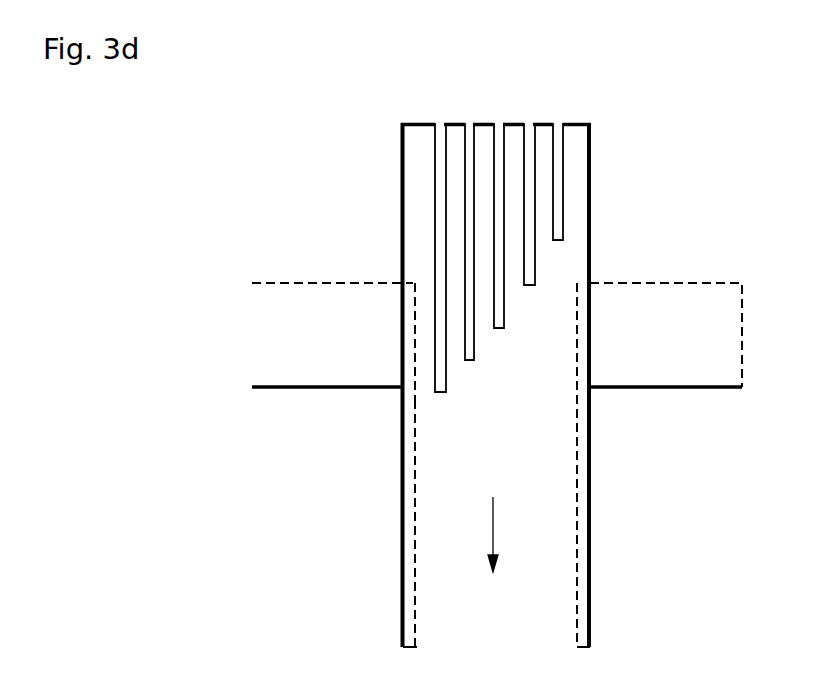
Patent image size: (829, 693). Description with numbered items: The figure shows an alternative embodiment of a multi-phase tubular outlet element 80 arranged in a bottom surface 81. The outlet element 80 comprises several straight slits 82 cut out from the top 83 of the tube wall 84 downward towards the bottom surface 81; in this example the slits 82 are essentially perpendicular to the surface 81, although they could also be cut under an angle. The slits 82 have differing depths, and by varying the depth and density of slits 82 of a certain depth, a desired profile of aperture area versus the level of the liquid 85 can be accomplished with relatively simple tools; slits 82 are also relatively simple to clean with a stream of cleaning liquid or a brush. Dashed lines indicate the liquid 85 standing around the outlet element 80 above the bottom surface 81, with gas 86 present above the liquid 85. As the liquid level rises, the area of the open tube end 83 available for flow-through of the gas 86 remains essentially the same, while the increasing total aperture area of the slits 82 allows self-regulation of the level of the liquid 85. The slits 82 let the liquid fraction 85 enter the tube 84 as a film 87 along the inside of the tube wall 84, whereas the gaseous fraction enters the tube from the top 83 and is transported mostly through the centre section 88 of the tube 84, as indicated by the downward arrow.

The tubular outlet element 80 is at (323, 120).
The bottom surface 81 is at (255, 383).
The straight slits 82 is at (468, 127).
The top of the tube wall 83 is at (590, 125).
The tube wall 84 is at (402, 540).
The liquid 85 is at (283, 278).
The gas 86 is at (647, 247).
The film 87 is at (580, 606).
The centre section of the tube 88 is at (512, 575).